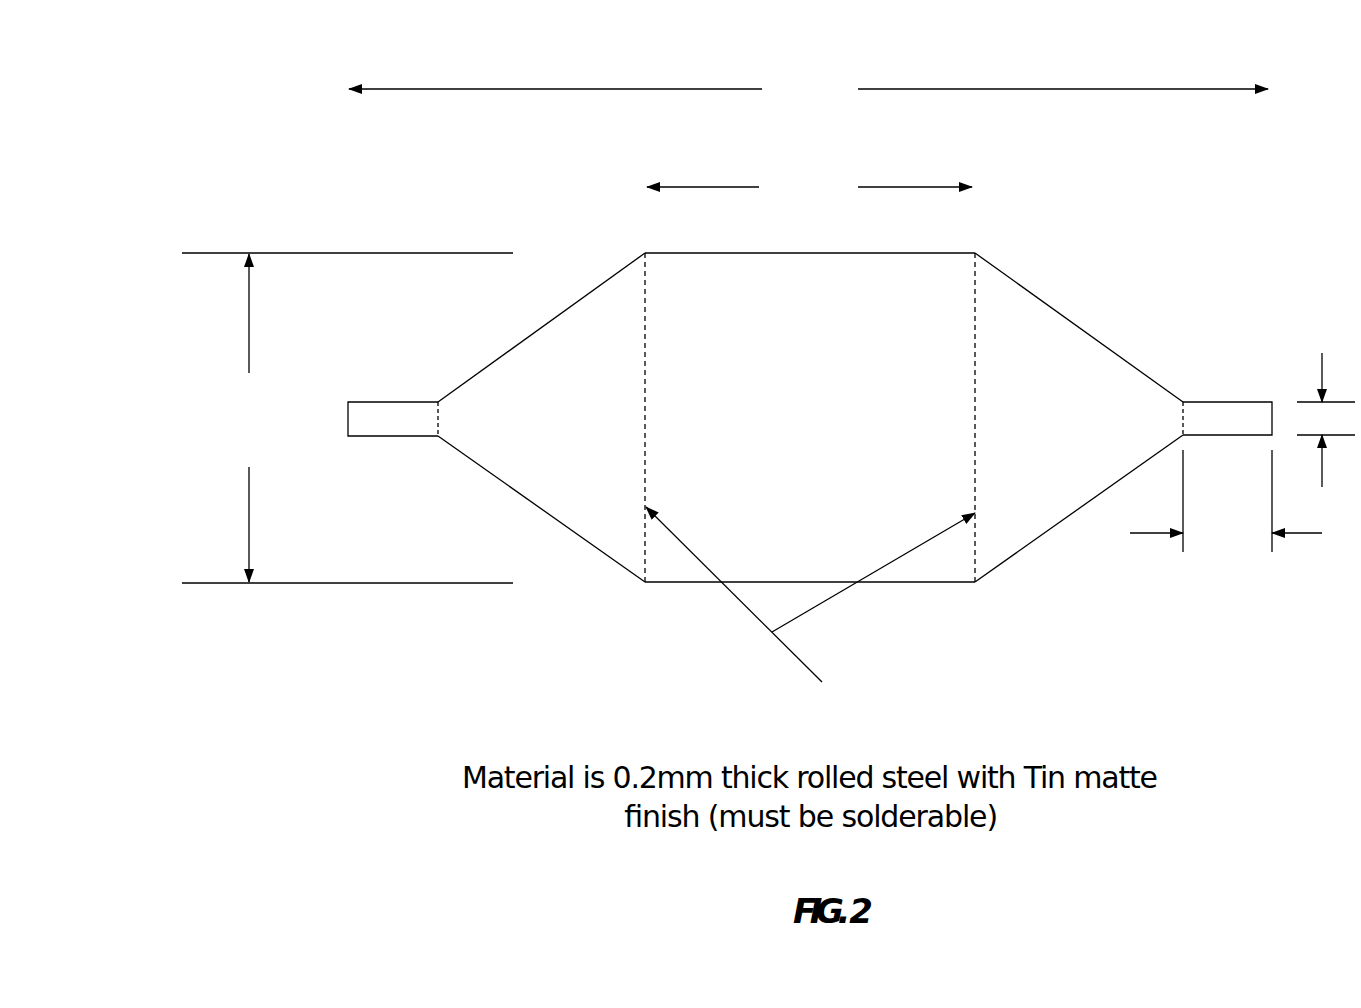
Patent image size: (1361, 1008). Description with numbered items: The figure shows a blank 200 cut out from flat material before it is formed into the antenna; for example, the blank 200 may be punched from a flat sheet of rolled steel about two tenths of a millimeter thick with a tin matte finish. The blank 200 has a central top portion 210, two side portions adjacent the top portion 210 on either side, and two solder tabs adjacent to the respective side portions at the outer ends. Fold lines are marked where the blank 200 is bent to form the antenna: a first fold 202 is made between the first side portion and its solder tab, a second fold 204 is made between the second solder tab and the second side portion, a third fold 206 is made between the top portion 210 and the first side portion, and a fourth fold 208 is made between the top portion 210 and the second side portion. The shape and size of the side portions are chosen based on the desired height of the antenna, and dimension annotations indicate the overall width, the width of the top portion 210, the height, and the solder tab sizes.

The blank 200 is at (118, 57).
The first fold 202 is at (440, 422).
The second fold 204 is at (1181, 418).
The third fold 206 is at (645, 300).
The fourth fold 208 is at (977, 300).
The top portion 210 is at (683, 286).